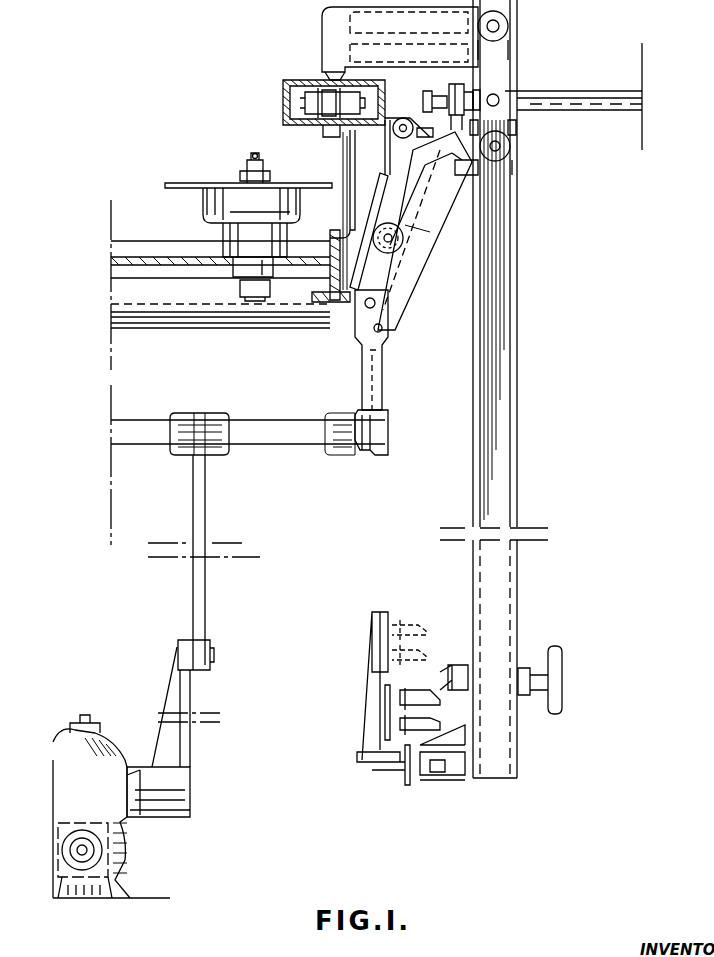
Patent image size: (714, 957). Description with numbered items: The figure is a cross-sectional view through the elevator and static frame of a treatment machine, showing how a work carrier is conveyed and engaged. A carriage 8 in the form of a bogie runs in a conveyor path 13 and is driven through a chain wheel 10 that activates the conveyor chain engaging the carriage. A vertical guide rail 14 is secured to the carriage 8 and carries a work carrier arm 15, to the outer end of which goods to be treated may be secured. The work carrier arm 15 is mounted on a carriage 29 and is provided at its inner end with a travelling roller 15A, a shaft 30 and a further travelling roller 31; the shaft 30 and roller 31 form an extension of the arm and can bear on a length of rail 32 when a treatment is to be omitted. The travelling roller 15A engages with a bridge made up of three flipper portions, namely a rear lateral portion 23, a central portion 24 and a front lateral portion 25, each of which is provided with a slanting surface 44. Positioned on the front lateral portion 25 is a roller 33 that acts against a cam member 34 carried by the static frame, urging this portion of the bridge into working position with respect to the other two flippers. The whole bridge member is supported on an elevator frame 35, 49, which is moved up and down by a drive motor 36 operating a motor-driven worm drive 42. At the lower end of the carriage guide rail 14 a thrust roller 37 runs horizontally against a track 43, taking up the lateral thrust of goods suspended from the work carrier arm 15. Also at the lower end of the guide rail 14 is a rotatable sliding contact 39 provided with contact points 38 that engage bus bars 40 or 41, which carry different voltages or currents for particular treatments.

The carriage 8 is at (328, 43).
The chain wheel 10 is at (228, 203).
The conveyor path 13 is at (292, 78).
The vertical guide rail 14 is at (518, 392).
The work carrier arm 15 is at (592, 105).
The travelling roller 15A is at (478, 90).
The rear lateral portion 23 is at (455, 170).
The central portion 24 is at (502, 153).
The front lateral portion 25 is at (440, 205).
The carriage 29 is at (500, 60).
The shaft 30 is at (452, 88).
The travelling roller 31 is at (425, 90).
The rail 32 is at (492, 130).
The roller 33 is at (392, 240).
The cam member 34 is at (386, 185).
The elevator frame 35 is at (304, 435).
The drive motor 36 is at (118, 813).
The thrust roller 37 is at (430, 765).
The contact points 38 is at (420, 700).
The rotatable sliding contact 39 is at (560, 682).
The bus bar 40 is at (380, 687).
The bus bar 41 is at (392, 615).
The motor-driven worm drive 42 is at (165, 790).
The track 43 is at (390, 765).
The slanting surface 44 is at (442, 235).
The elevator frame 49 is at (382, 380).